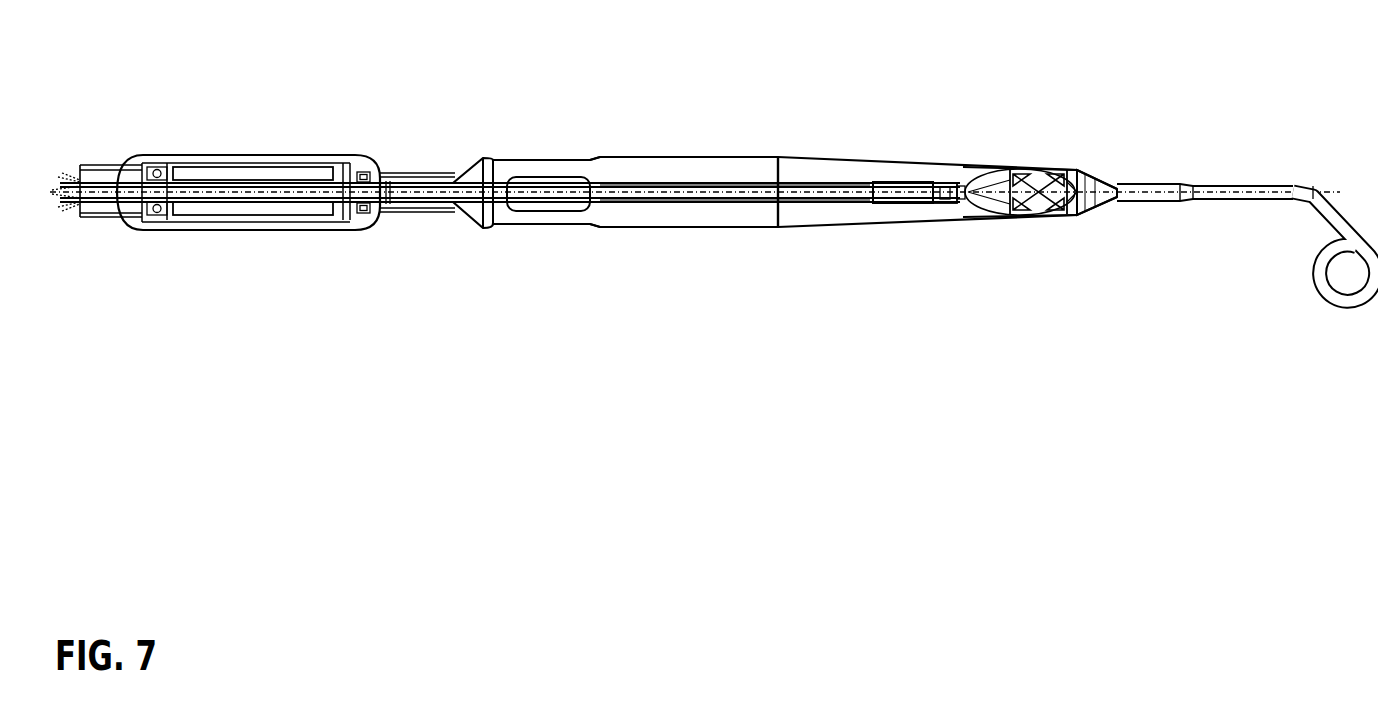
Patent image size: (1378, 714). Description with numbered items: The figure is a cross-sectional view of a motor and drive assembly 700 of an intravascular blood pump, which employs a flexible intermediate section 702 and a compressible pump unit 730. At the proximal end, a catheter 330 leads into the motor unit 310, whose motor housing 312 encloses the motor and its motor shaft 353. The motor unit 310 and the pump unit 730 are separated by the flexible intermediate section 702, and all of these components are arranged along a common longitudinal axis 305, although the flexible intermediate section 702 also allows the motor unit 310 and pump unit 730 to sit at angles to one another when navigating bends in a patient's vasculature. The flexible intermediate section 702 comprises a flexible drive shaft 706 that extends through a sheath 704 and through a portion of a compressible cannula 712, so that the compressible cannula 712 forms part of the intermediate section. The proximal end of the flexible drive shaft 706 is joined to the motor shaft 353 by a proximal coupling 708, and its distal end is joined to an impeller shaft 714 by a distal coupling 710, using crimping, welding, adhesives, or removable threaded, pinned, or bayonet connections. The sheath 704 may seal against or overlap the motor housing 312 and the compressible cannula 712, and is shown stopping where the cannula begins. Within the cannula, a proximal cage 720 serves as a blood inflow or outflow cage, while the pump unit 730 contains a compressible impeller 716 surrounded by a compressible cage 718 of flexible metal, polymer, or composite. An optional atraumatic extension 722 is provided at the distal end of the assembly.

The motor and drive assembly 700 is at (173, 589).
The motor unit 310 is at (110, 88).
The motor housing 312 is at (173, 170).
The motor shaft 353 is at (376, 167).
The catheter 330 is at (102, 167).
The flexible intermediate section 702 is at (383, 70).
The sheath 704 is at (442, 183).
The proximal coupling 708 is at (420, 183).
The proximal cage 720 is at (550, 178).
The flexible drive shaft 706 is at (625, 185).
The common longitudinal axis 305 is at (702, 192).
The compressible cannula 712 is at (802, 157).
The distal coupling 710 is at (905, 183).
The compressible pump unit 730 is at (1115, 90).
The impeller shaft 714 is at (993, 167).
The impeller 716 is at (1054, 172).
The compressible cage 718 is at (1096, 185).
The atraumatic extension 722 is at (1293, 184).